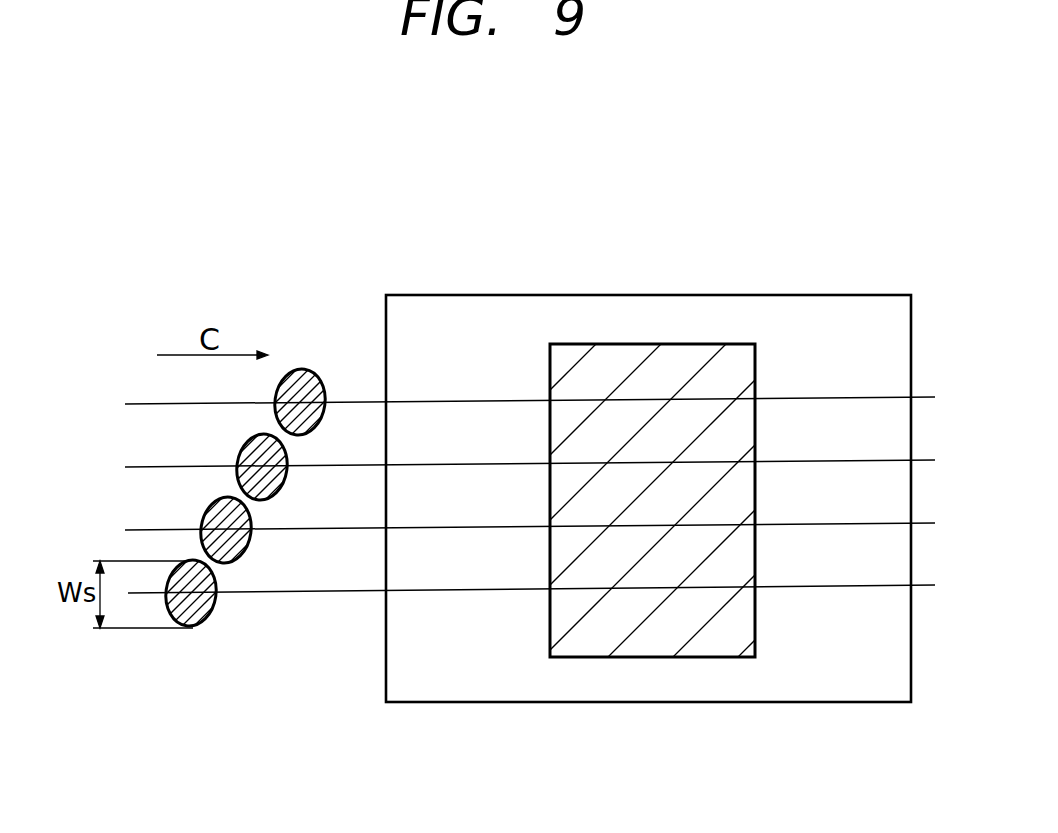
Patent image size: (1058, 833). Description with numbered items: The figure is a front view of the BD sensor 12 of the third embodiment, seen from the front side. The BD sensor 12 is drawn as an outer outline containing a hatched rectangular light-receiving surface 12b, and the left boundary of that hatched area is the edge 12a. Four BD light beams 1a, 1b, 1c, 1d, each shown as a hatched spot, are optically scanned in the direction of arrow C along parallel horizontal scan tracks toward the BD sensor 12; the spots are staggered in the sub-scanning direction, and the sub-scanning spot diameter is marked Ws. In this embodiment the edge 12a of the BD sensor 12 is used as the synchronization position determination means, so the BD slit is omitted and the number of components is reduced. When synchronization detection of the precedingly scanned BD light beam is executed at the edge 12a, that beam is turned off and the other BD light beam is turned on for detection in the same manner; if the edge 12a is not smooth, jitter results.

The BD light beam 1a is at (303, 418).
The BD light beam 1b is at (265, 483).
The BD light beam 1c is at (229, 546).
The BD light beam 1d is at (194, 609).
The BD sensor 12 is at (705, 218).
The edge 12a is at (552, 622).
The light-receiving surface 12b is at (688, 352).